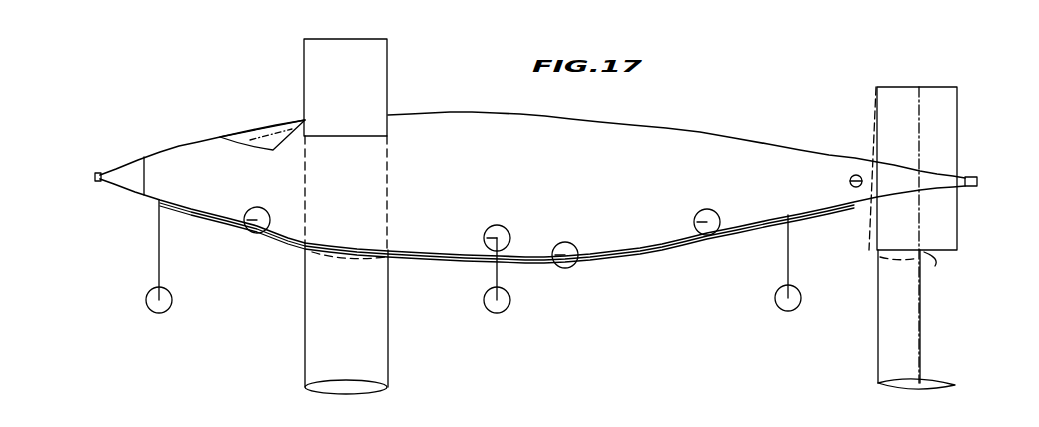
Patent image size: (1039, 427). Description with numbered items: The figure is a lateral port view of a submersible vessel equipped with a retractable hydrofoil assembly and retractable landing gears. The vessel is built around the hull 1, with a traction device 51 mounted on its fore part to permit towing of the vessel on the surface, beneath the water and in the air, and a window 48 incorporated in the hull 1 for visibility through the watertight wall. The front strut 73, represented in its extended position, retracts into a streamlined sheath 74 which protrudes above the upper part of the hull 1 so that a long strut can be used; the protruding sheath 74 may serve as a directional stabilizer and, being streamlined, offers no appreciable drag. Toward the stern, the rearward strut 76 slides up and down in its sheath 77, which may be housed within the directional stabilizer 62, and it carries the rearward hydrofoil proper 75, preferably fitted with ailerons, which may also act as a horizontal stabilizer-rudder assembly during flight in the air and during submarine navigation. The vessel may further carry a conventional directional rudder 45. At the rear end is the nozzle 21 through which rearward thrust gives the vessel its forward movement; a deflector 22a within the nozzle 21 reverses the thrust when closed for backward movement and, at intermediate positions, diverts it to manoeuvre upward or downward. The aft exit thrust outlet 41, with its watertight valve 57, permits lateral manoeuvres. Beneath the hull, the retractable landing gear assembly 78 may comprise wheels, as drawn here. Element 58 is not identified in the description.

The hull 1 is at (458, 128).
The nozzle 21 is at (968, 188).
The deflector 22a is at (978, 180).
The aft exit thrust outlet 41 is at (856, 175).
The directional rudder 45 is at (948, 128).
The window 48 is at (262, 133).
The traction device 51 is at (95, 176).
The watertight valve 57 is at (853, 186).
The car bottom 58 is at (360, 388).
The directional stabilizer 62 is at (872, 137).
The front strut 73 is at (322, 328).
The streamlined sheath 74 is at (325, 70).
The rearward hydrofoil 75 is at (938, 266).
The rearward strut 76 is at (893, 328).
The sheath 77 is at (912, 94).
The retractable landing gear assembly 78 is at (253, 232).